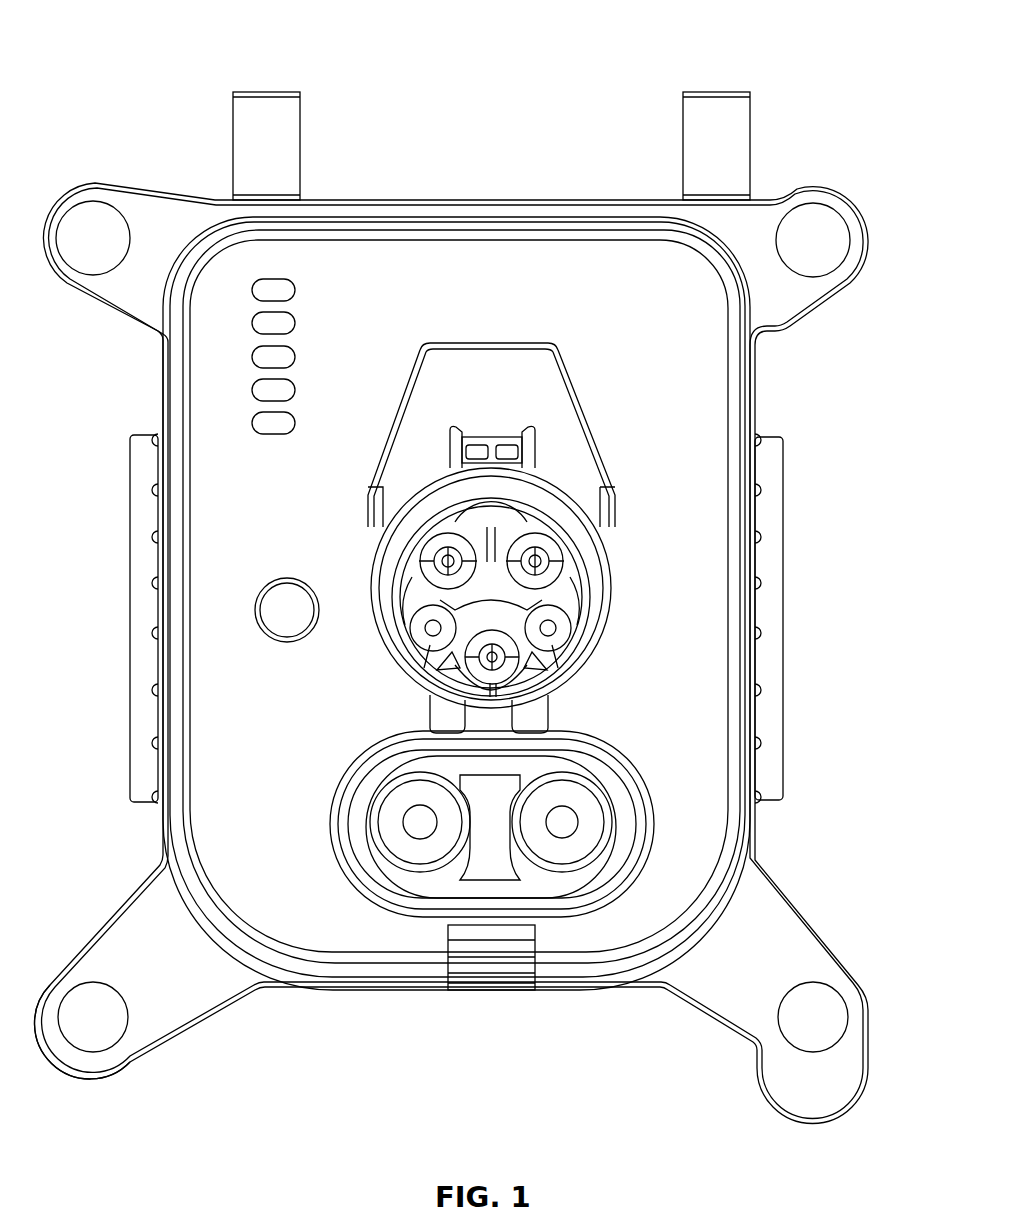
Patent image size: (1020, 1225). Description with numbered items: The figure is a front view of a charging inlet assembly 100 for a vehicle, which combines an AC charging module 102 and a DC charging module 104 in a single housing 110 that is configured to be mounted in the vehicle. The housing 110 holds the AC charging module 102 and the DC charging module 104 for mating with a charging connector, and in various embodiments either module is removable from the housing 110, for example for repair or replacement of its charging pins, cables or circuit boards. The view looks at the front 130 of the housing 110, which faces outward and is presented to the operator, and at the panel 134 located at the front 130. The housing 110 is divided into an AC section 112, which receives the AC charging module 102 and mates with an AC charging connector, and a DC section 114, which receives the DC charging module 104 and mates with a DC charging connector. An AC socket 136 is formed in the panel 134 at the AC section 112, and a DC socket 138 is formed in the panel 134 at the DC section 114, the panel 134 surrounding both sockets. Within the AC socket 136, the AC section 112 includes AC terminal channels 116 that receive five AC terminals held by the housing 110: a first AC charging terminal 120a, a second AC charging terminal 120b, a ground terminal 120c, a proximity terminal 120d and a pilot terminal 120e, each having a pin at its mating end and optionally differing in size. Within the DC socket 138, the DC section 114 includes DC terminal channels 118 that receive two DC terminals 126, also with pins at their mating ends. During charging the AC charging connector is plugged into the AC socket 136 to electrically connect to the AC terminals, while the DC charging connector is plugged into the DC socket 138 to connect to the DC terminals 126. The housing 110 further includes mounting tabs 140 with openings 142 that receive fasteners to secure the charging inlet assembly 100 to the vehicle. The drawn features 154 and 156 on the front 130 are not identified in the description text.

The charging inlet assembly 100 is at (150, 58).
The AC charging module 102 is at (628, 561).
The DC charging module 104 is at (662, 800).
The housing 110 is at (312, 918).
The AC section 112 is at (592, 633).
The DC section 114 is at (635, 838).
The AC terminal channels 116 is at (570, 575).
The DC terminal channels 118 is at (602, 790).
The first AC charging terminal 120a is at (448, 553).
The second AC charging terminal 120b is at (553, 557).
The ground terminal 120c is at (495, 690).
The proximity terminal 120d is at (424, 626).
The pilot terminal 120e is at (552, 634).
The DC terminals 126 is at (562, 830).
The front 130 is at (243, 805).
The panel 134 is at (494, 300).
The AC socket 136 is at (390, 561).
The DC socket 138 is at (348, 781).
The mounting tabs 140 is at (140, 1005).
The openings 142 is at (86, 1028).
The port 154 is at (290, 610).
The port opening 156 is at (260, 639).